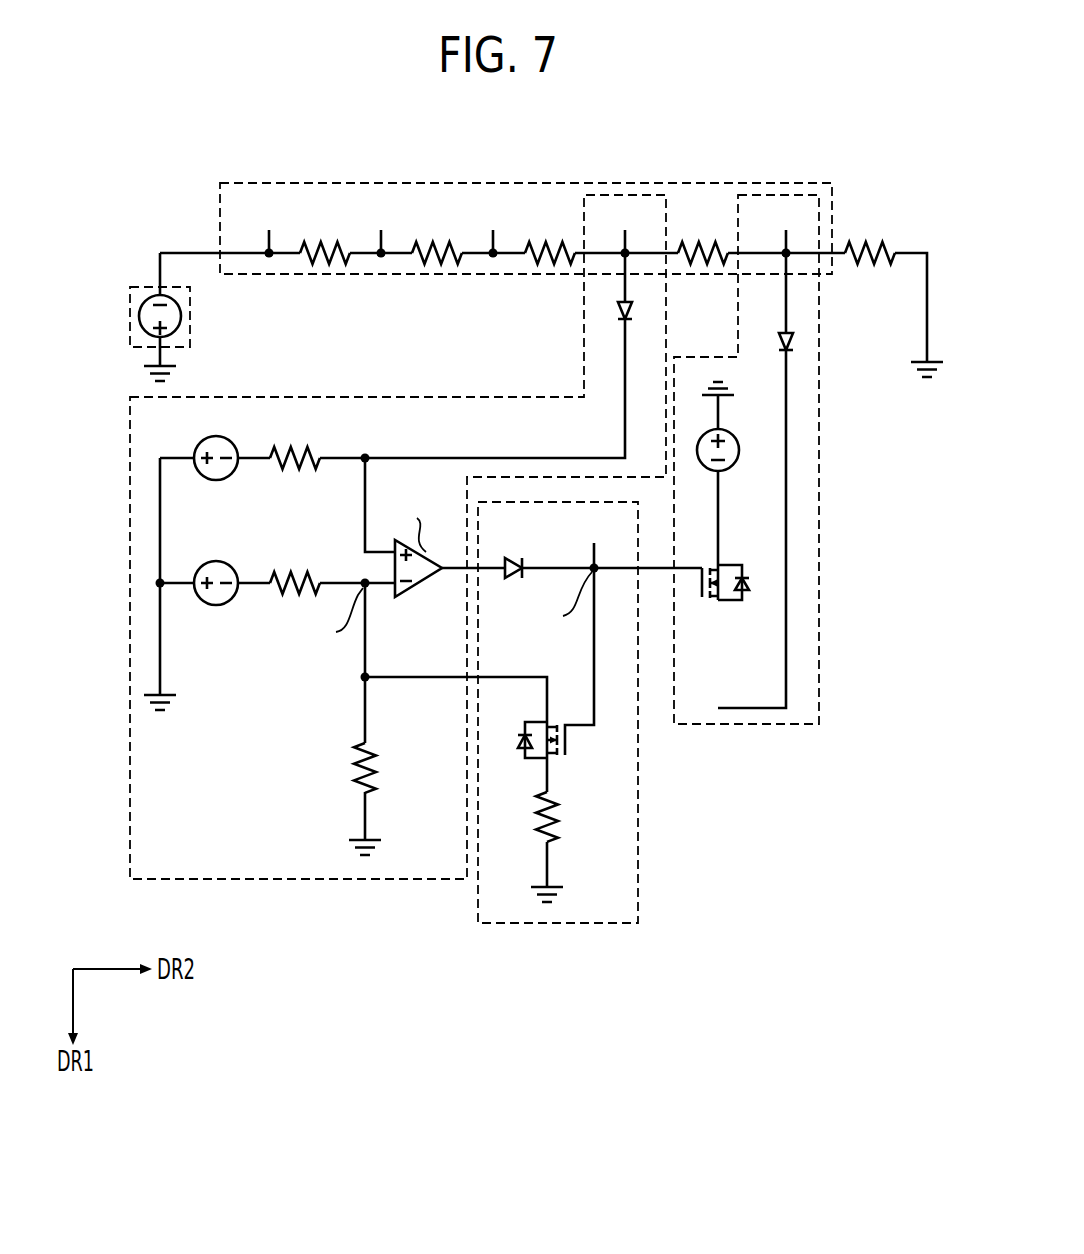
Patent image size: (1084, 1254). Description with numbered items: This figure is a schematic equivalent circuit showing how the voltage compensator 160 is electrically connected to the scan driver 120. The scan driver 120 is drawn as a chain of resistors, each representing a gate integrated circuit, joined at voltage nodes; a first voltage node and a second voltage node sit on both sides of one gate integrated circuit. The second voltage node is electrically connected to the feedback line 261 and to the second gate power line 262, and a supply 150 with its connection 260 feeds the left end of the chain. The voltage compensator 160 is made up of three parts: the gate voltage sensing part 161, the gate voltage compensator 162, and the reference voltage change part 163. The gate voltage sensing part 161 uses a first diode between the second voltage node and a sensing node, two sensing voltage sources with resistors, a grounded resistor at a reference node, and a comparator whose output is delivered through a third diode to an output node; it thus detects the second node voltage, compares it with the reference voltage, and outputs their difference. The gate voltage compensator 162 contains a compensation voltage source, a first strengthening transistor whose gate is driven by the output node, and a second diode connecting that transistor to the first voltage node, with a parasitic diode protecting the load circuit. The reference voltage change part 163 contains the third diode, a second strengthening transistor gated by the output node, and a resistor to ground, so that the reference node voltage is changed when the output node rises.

The scan driver 120 is at (285, 183).
The connection line 260 is at (160, 270).
The power supply 150 is at (130, 317).
The feedback line 261 is at (625, 350).
The second gate power line 262 is at (786, 407).
The gate voltage sensing part 161 is at (130, 752).
The gate voltage compensator 162 is at (820, 512).
The reference voltage change part 163 is at (640, 850).
The voltage compensator 160 is at (815, 982).